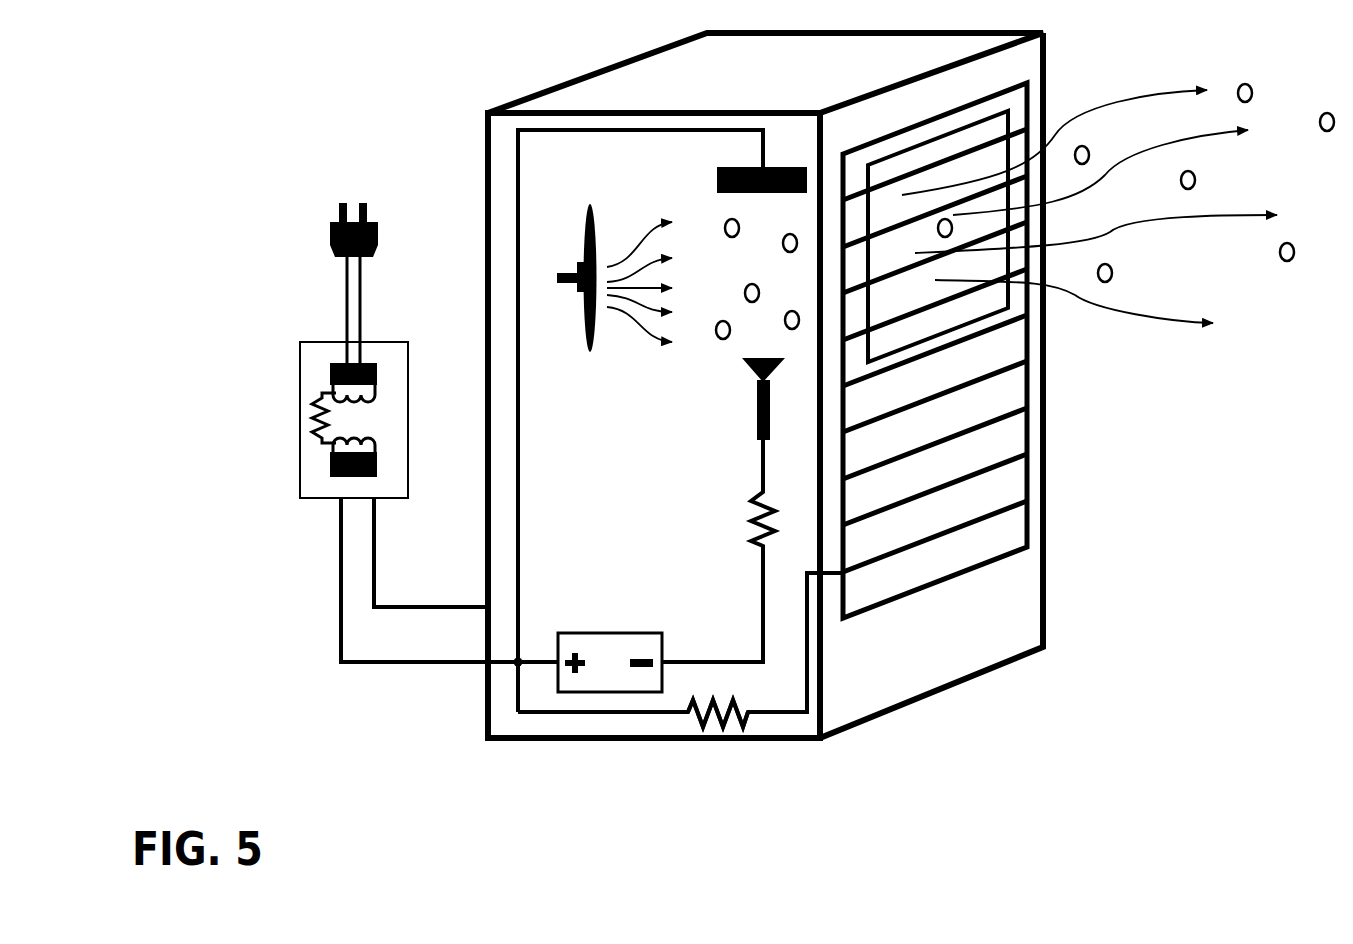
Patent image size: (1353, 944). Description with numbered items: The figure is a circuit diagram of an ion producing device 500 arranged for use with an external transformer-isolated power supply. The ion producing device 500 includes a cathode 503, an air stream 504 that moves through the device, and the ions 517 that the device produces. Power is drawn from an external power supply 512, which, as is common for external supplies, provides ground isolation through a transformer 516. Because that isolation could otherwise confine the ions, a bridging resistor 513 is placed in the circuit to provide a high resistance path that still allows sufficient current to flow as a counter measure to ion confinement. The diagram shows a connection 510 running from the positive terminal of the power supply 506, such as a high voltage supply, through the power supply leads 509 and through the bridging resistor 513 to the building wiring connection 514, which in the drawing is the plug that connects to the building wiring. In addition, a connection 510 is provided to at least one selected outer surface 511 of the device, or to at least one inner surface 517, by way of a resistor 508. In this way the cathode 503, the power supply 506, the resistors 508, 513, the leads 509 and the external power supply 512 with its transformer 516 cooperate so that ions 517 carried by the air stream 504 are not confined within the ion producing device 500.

The ion producing device 500 is at (951, 697).
The cathode 503 is at (778, 155).
The air stream 504 is at (560, 238).
The power supply 506 is at (593, 698).
The resistor 508 is at (742, 722).
The power supply leads 509 is at (328, 570).
The connection 510 is at (512, 663).
The outer surface 511 is at (1005, 487).
The external power supply 512 is at (325, 437).
The bridging resistor 513 is at (313, 452).
The building wiring connection 514 is at (313, 220).
The transformer 516 is at (378, 442).
The ions 517 is at (742, 313).